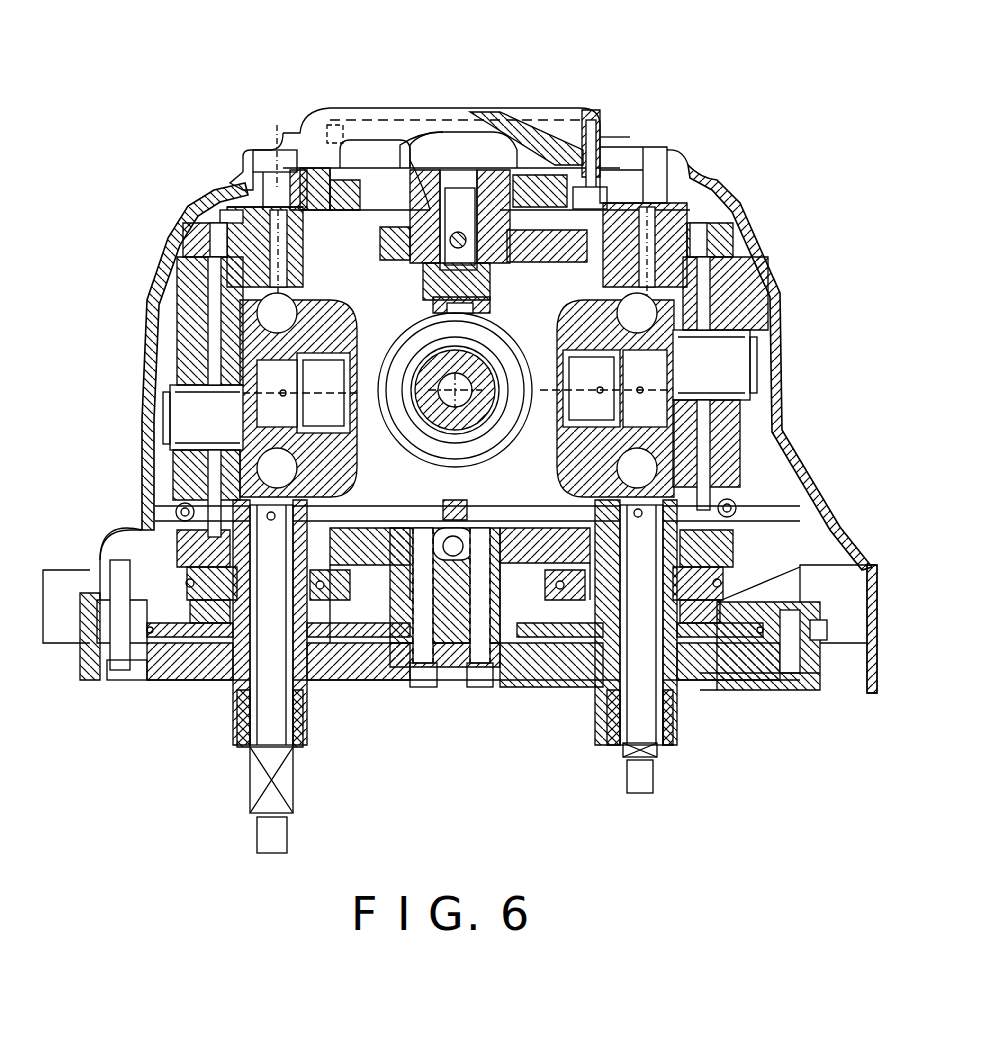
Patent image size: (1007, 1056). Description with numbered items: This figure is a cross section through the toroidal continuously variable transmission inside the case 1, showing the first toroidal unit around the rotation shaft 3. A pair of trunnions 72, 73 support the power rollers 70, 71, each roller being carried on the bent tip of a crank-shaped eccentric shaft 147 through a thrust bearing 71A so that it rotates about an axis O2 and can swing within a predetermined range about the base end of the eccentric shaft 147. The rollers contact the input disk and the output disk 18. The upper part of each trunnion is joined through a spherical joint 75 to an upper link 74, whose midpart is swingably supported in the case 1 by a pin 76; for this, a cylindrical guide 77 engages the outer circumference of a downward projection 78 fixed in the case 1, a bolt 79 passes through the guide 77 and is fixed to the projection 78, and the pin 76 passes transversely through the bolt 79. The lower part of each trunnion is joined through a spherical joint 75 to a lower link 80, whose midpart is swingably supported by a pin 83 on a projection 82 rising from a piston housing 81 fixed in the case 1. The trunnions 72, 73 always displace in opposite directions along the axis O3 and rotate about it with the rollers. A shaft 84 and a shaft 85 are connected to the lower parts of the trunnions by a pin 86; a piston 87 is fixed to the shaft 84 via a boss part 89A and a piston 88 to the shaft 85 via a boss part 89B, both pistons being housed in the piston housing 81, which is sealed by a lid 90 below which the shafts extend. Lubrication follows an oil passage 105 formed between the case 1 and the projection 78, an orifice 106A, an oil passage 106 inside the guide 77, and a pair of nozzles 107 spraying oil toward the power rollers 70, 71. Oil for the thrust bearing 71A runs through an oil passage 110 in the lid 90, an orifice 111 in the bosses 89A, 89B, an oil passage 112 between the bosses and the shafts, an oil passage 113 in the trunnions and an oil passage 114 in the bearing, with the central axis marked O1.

The case 1 is at (540, 140).
The rotation shaft 3 is at (507, 317).
The output disk 18 is at (560, 160).
The power roller 70 is at (333, 155).
The power roller 71 is at (643, 152).
The thrust bearing 71A is at (235, 300).
The trunnion 72 is at (253, 230).
The trunnion 73 is at (667, 223).
The upper link 74 is at (382, 175).
The spherical joint 75 is at (200, 202).
The pin 76 is at (462, 185).
The cylindrical guide 77 is at (418, 273).
The downward projection 78 is at (503, 175).
The bolt 79 is at (433, 313).
The lower link 80 is at (547, 555).
The piston housing 81 is at (511, 690).
The projection 82 is at (497, 513).
The pin 83 is at (480, 667).
The shaft 84 is at (237, 748).
The shaft 85 is at (667, 743).
The pin 86 is at (215, 500).
The piston 87 is at (165, 685).
The piston 88 is at (778, 695).
The boss part 89A is at (300, 723).
The boss part 89B is at (605, 740).
The lid 90 is at (150, 680).
The oil passage 105 is at (348, 150).
The oil passage 106 is at (428, 150).
The orifice 106A is at (412, 150).
The nozzles 107 is at (350, 433).
The oil passage 110 is at (790, 660).
The orifice 111 is at (318, 690).
The oil passage 112 is at (178, 672).
The oil passage 113 is at (213, 480).
The oil passage 114 is at (247, 333).
The eccentric shaft 147 is at (190, 418).
The main axis O1 is at (463, 385).
The axis O2 is at (340, 440).
The axis O3 is at (660, 98).